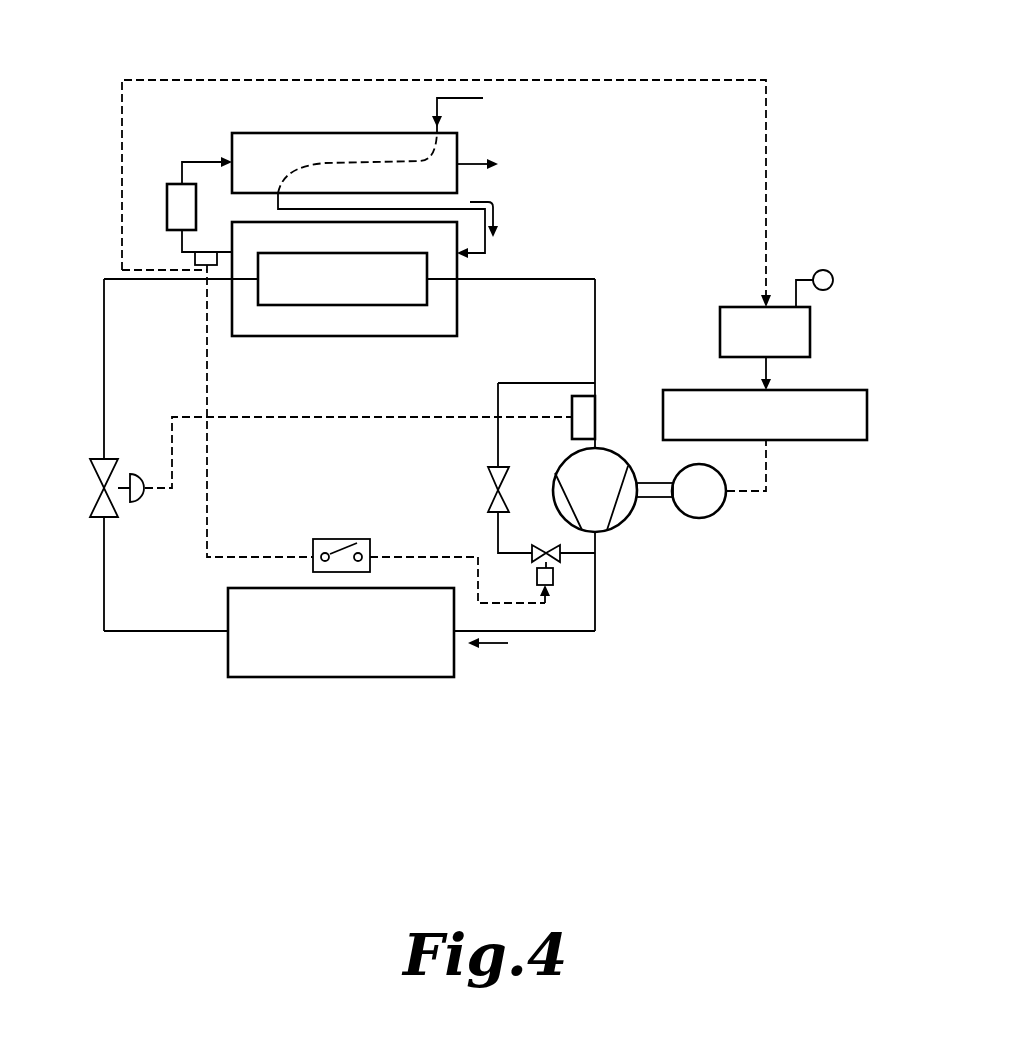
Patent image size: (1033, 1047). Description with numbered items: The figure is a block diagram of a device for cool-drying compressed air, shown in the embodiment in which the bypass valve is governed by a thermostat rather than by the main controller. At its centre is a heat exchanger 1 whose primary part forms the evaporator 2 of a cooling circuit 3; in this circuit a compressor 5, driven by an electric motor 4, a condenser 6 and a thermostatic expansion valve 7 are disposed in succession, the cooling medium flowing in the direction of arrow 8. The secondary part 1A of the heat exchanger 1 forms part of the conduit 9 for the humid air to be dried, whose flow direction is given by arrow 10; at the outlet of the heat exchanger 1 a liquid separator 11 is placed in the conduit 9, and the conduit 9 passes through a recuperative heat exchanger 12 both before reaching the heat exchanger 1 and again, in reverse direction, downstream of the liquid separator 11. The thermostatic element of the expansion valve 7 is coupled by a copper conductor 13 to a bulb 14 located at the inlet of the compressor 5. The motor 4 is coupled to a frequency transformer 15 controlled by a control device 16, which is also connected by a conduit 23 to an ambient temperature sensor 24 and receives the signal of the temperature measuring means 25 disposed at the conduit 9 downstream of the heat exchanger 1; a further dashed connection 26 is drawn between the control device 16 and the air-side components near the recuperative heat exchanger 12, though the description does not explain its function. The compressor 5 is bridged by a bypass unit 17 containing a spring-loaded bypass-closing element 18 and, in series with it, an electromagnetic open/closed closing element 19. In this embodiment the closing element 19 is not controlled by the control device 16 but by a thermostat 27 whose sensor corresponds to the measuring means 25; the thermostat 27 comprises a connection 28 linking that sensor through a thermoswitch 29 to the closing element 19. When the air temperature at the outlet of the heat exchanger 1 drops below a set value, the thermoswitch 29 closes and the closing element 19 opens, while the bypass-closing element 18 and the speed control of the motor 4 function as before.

The heat exchanger 1 is at (178, 350).
The secondary part 1A is at (457, 312).
The evaporator 2 is at (342, 305).
The cooling circuit 3 is at (630, 350).
The electric motor 4 is at (705, 518).
The compressor 5 is at (623, 522).
The condenser 6 is at (415, 677).
The expansion valve 7 is at (90, 510).
The arrow 8 is at (493, 643).
The conduit 9 is at (463, 98).
The arrow 10 is at (493, 202).
The liquid separator 11 is at (167, 207).
The recuperative heat exchanger 12 is at (277, 133).
The copper conductor 13 is at (172, 420).
The bulb 14 is at (597, 423).
The frequency transformer 15 is at (867, 425).
The control device 16 is at (810, 335).
The bypass unit 17 is at (498, 400).
The bypass-closing element 18 is at (488, 488).
The open/closed closing element 19 is at (556, 562).
The conduit 23 is at (803, 280).
The ambient temperature sensor 24 is at (830, 271).
The temperature measuring means 25 is at (195, 259).
The control line 26 is at (650, 80).
The thermostat 27 is at (328, 515).
The connection 28 is at (217, 557).
The thermoswitch 29 is at (370, 548).